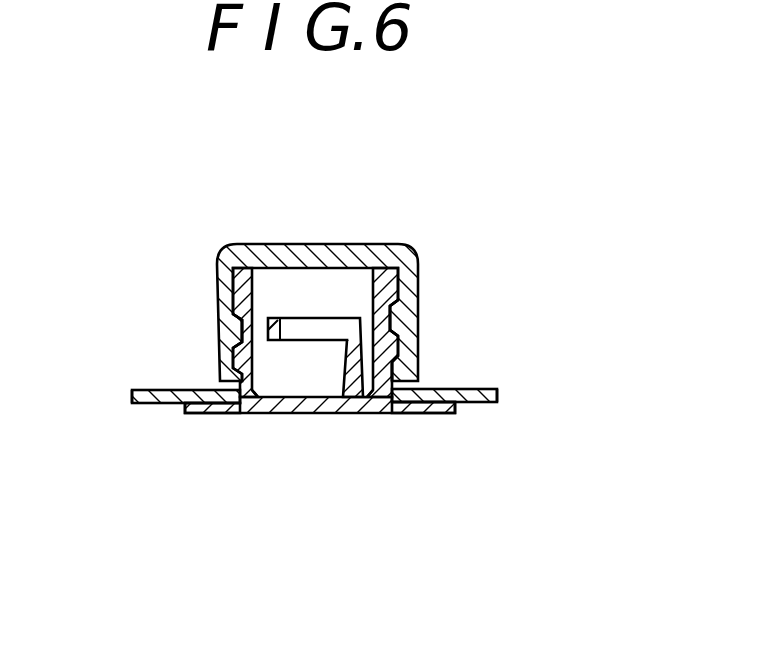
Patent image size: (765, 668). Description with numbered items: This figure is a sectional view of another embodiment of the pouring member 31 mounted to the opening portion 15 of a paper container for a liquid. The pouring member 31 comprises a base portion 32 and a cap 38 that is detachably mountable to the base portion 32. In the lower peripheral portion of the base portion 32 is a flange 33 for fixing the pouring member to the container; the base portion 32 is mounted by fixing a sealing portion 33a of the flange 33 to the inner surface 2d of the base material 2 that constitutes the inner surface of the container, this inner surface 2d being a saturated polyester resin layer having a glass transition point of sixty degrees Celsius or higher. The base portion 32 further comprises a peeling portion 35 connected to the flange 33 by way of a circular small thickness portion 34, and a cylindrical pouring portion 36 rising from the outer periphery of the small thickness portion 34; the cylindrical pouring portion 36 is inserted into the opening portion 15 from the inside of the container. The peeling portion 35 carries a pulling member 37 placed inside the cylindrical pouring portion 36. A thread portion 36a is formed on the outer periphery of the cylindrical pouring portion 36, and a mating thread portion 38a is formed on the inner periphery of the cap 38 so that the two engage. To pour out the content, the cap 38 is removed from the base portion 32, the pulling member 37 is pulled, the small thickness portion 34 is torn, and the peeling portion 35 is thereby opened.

The pouring member 31 is at (438, 178).
The cap 38 is at (415, 260).
The thread portion 38a is at (228, 318).
The cylindrical pouring portion 36 is at (395, 280).
The thread portion 36a is at (398, 360).
The base portion 32 is at (406, 322).
The pulling member 37 is at (280, 318).
The base material 2 is at (160, 391).
The inner surface 2d is at (134, 406).
The flange 33 is at (190, 413).
The sealing portion 33a is at (415, 413).
The small thickness portion 34 is at (252, 413).
The peeling portion 35 is at (305, 413).
The opening portion 15 is at (329, 438).